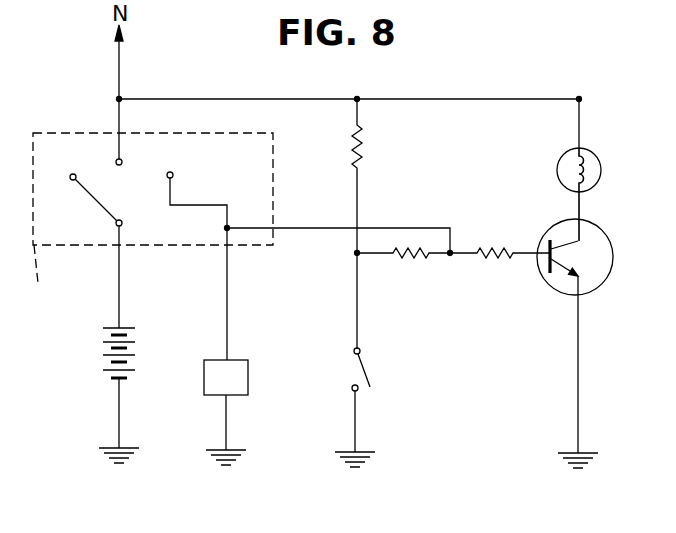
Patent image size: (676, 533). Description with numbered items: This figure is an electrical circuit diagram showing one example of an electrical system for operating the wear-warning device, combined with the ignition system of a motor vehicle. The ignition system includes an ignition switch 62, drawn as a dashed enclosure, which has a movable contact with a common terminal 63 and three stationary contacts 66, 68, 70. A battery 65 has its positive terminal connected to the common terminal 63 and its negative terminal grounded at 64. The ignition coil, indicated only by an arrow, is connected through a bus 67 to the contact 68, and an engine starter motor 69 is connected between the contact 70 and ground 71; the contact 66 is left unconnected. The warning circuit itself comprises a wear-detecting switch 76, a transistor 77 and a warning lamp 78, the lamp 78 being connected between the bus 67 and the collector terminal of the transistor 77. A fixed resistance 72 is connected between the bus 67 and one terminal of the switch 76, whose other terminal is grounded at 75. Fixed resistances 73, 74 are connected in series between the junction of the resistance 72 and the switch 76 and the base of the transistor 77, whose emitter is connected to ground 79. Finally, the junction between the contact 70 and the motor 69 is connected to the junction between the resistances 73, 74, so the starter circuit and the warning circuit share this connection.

The ignition switch 62 is at (150, 226).
The common terminal 63 is at (117, 227).
The ground 64 is at (112, 468).
The battery 65 is at (98, 352).
The stationary contact 66 is at (70, 178).
The bus 67 is at (258, 99).
The stationary contact 68 is at (123, 162).
The engine starter motor 69 is at (248, 378).
The stationary contact 70 is at (172, 191).
The ground 71 is at (222, 468).
The fixed resistance 72 is at (360, 154).
The fixed resistance 73 is at (403, 262).
The fixed resistance 74 is at (487, 262).
The ground 75 is at (353, 470).
The wear-detecting switch 76 is at (364, 374).
The transistor 77 is at (613, 262).
The warning lamp 78 is at (601, 165).
The ground 79 is at (570, 471).